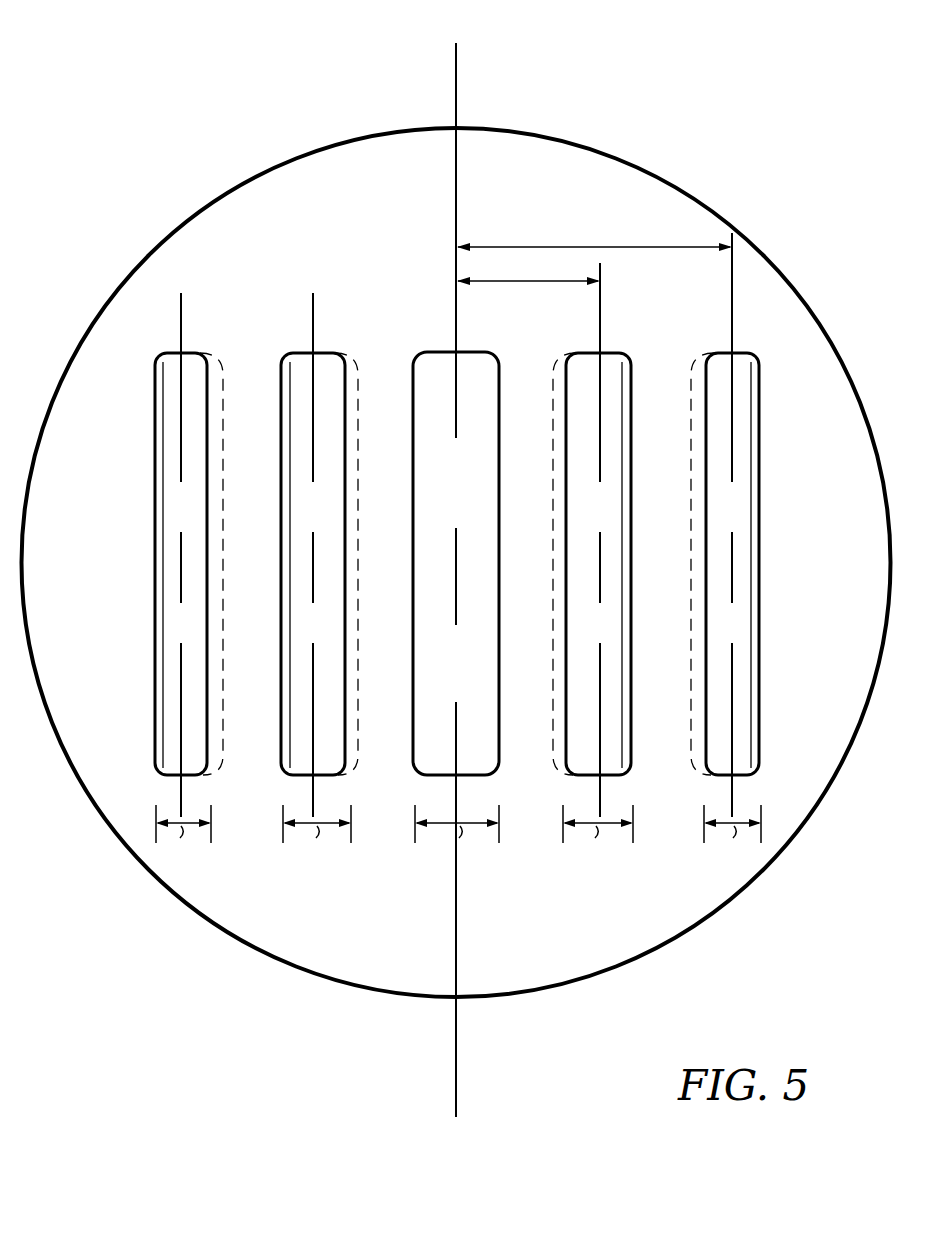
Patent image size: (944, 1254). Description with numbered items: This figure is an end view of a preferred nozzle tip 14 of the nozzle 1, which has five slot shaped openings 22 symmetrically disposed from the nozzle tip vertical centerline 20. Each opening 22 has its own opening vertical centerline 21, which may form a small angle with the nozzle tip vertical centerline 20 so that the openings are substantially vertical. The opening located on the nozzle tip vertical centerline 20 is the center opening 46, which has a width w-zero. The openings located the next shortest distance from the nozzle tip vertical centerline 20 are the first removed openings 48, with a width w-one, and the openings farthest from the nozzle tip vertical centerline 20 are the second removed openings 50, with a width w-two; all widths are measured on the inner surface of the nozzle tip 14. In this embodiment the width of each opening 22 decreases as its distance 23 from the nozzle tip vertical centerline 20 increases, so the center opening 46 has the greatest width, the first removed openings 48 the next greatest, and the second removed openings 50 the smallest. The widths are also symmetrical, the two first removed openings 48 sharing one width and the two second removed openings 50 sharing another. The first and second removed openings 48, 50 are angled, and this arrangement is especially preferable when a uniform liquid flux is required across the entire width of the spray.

The nozzle plate assembly 1 is at (634, 113).
The nozzle tip 14 is at (345, 141).
The nozzle tip vertical centerline 20 is at (458, 171).
The opening vertical centerline 21 is at (182, 318).
The openings 22 is at (168, 654).
The distance 23 is at (522, 247).
The center opening 46 is at (467, 352).
The first removed openings 48 is at (293, 355).
The second removed openings 50 is at (168, 357).